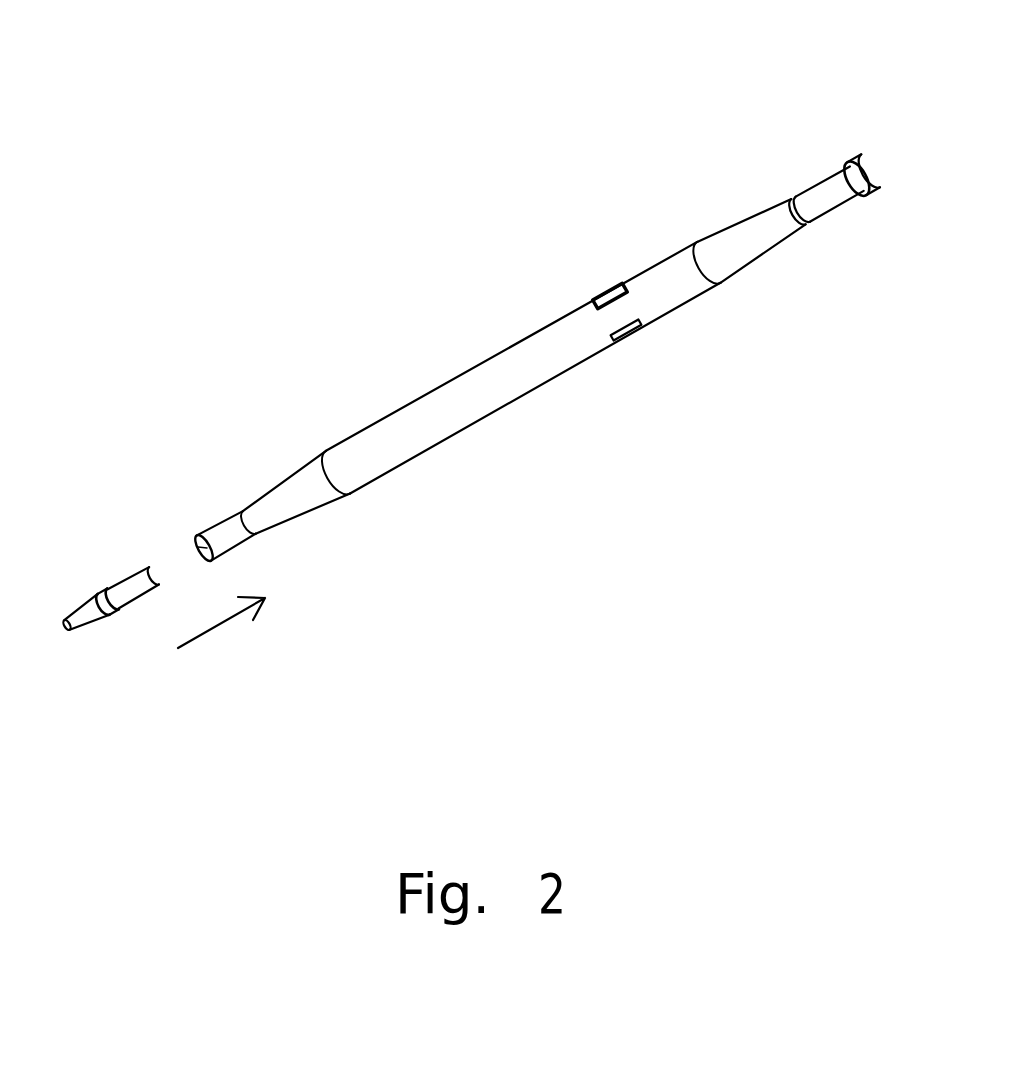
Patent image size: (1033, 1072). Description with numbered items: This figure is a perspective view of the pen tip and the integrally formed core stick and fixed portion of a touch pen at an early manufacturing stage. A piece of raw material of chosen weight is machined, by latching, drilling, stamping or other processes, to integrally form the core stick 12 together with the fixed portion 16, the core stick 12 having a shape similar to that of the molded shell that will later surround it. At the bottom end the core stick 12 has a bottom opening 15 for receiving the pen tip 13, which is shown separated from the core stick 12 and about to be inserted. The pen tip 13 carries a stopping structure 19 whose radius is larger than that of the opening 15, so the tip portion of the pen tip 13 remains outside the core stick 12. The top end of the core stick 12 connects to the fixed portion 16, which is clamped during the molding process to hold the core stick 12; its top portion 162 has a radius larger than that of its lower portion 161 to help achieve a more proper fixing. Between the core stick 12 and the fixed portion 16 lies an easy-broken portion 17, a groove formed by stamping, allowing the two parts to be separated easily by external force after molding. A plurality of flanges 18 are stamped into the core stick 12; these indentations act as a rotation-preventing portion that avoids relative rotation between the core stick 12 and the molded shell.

The core stick 12 is at (455, 462).
The pen tip 13 is at (120, 618).
The bottom opening 15 is at (193, 545).
The fixed portion 16 is at (850, 158).
The easy-broken portion 17 is at (790, 197).
The flanges 18 is at (598, 285).
The stopping structure 19 is at (100, 590).
The lower portion 161 is at (870, 202).
The top portion 162 is at (825, 198).